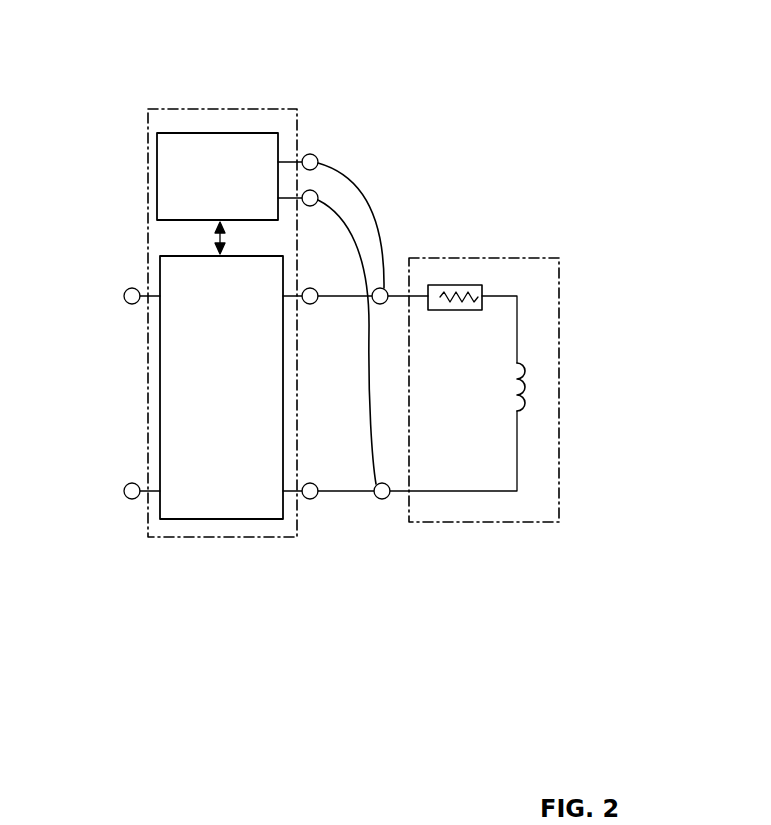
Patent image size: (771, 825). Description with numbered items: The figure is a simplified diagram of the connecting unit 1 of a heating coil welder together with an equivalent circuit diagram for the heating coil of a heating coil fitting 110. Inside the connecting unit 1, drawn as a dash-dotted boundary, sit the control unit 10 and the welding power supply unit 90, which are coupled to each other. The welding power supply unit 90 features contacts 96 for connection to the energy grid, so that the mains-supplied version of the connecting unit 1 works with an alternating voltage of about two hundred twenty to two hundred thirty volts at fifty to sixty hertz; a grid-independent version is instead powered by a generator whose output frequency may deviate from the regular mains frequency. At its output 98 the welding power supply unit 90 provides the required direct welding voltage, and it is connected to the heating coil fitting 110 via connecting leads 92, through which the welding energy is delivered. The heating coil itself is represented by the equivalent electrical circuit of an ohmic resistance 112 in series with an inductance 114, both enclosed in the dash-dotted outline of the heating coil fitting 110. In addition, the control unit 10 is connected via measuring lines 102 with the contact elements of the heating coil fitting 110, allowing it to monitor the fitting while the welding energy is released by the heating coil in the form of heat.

The connecting unit 1 is at (290, 120).
The control unit 10 is at (226, 172).
The welding power supply unit 90 is at (228, 420).
The connecting leads 92 is at (353, 312).
The contacts 96 is at (128, 388).
The output 98 is at (314, 388).
The measuring lines 102 is at (345, 196).
The heating coil fitting 110 is at (522, 266).
The ohmic resistance 112 is at (469, 270).
The inductance 114 is at (547, 393).